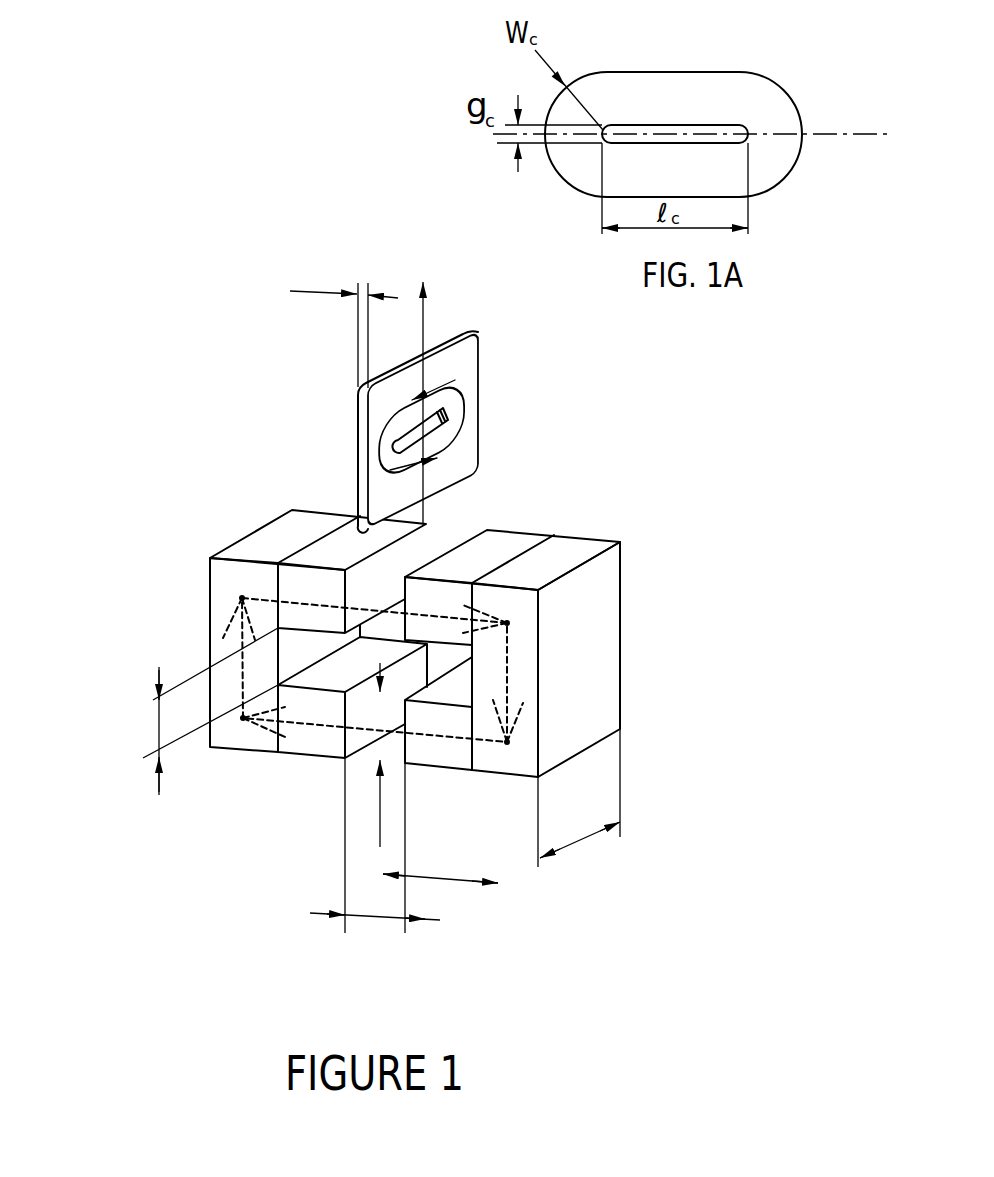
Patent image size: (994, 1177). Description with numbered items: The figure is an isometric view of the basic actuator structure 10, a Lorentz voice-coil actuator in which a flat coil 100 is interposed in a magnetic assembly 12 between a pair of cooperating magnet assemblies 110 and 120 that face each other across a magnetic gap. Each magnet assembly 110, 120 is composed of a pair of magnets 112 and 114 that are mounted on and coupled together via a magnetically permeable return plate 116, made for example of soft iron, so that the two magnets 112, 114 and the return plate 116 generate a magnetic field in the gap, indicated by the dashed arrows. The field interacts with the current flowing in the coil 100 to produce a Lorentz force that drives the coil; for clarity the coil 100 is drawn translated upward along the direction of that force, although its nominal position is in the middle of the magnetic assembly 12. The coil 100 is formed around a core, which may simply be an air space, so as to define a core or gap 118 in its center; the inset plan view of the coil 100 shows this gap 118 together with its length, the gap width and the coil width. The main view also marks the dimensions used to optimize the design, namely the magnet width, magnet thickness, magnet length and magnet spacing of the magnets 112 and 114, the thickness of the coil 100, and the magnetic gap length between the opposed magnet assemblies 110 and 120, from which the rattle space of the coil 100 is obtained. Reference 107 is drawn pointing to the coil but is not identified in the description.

In FIG. 1, the basic actuator structure 10 is at (459, 590).
In FIG. 1, the magnetic assembly 12 is at (635, 712).
In FIG. 1, the flat coil 100 is at (422, 383).
In FIG. 1, the track 107 is at (460, 410).
In FIG. 1A, the track 107 is at (857, 133).
In FIG. 1, the magnet assembly 110 is at (497, 570).
In FIG. 1, the magnet 112 is at (335, 550).
In FIG. 1, the magnet 114 is at (315, 737).
In FIG. 1, the return plate 116 is at (228, 607).
In FIG. 1, the core or gap 118 is at (397, 440).
In FIG. 1A, the core or gap 118 is at (635, 125).
In FIG. 1, the magnet assembly 120 is at (270, 758).